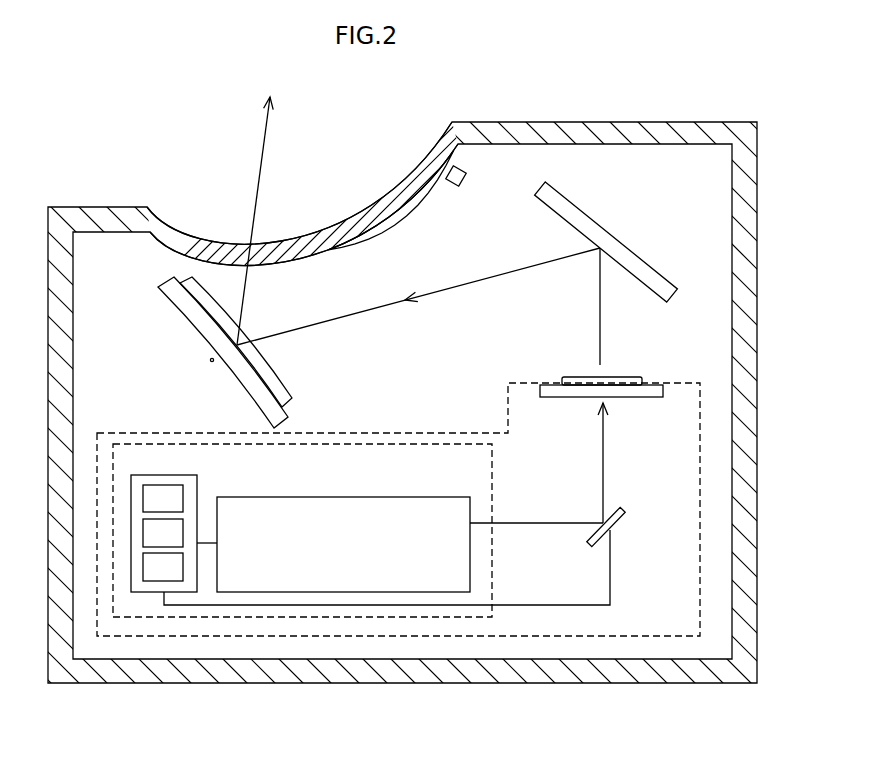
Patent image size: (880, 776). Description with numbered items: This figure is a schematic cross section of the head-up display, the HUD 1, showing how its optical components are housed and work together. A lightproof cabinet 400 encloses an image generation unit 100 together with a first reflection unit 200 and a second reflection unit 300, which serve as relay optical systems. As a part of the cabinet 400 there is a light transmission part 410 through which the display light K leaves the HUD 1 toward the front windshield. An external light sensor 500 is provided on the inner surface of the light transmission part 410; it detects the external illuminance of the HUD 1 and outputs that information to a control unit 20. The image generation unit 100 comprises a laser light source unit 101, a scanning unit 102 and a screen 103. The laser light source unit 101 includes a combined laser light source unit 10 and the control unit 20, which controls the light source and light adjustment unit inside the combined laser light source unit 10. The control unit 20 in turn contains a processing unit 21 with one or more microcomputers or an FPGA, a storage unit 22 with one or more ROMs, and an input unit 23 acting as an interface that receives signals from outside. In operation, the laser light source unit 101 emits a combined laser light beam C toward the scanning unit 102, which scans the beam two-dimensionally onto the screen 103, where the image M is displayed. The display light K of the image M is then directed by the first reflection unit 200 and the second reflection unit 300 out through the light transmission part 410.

The HUD 1 is at (713, 98).
The combined laser light source unit 10 is at (292, 497).
The control unit 20 is at (165, 476).
The processing unit 21 is at (163, 498).
The storage unit 22 is at (163, 533).
The input unit 23 is at (163, 567).
The image generation unit 100 is at (650, 633).
The laser light source unit 101 is at (310, 617).
The scanning unit 102 is at (618, 528).
The screen 103 is at (630, 397).
The first reflection unit 200 is at (602, 225).
The second reflection unit 300 is at (160, 282).
The cabinet 400 is at (558, 121).
The light transmission part 410 is at (394, 222).
The external light sensor 500 is at (464, 186).
The image M is at (637, 377).
The display light K is at (386, 308).
The combined laser light beam C is at (545, 523).